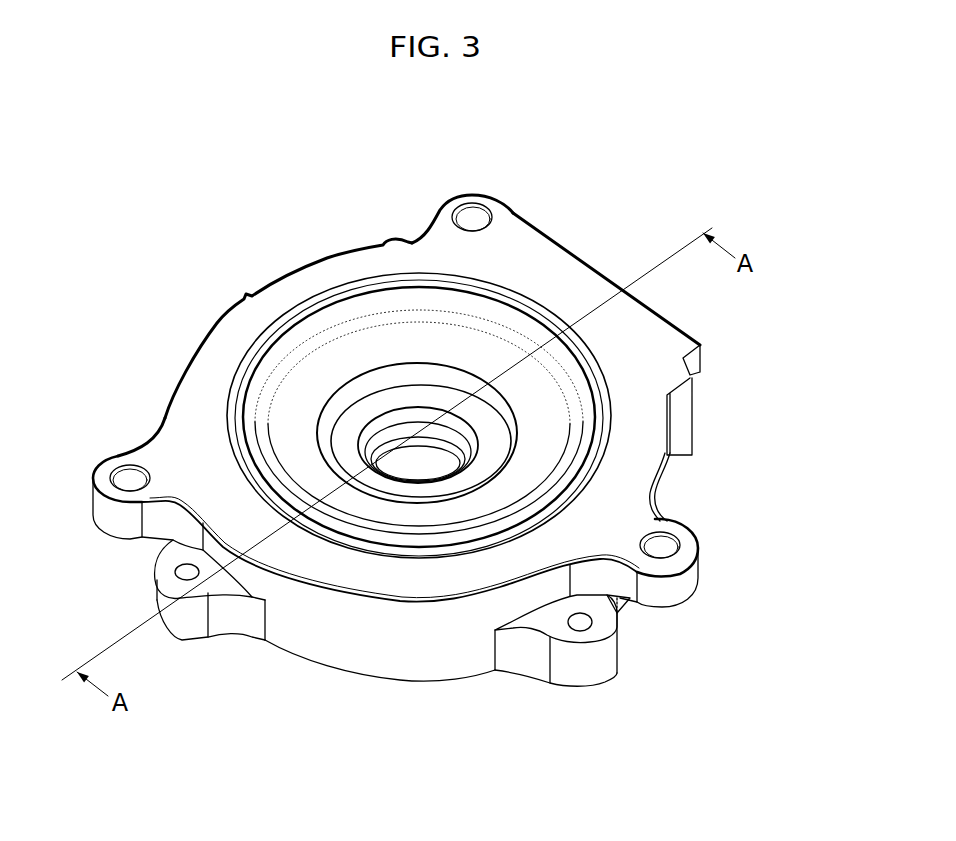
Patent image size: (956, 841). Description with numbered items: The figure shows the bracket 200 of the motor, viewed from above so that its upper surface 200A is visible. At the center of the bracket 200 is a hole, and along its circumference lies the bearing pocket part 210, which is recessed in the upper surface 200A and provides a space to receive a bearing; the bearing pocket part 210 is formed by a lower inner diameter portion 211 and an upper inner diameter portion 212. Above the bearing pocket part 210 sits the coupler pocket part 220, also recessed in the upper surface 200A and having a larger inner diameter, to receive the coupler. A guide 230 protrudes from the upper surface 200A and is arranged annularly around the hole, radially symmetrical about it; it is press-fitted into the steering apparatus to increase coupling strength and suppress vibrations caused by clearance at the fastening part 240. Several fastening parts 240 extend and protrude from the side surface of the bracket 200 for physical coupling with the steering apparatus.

The bracket 200 is at (213, 360).
The upper surface 200A is at (543, 270).
The bearing pocket part 210 is at (783, 431).
The lower inner diameter portion 211 is at (477, 437).
The upper inner diameter portion 212 is at (463, 424).
The coupler pocket part 220 is at (407, 382).
The guide 230 is at (307, 302).
The fastening part 240 is at (470, 212).